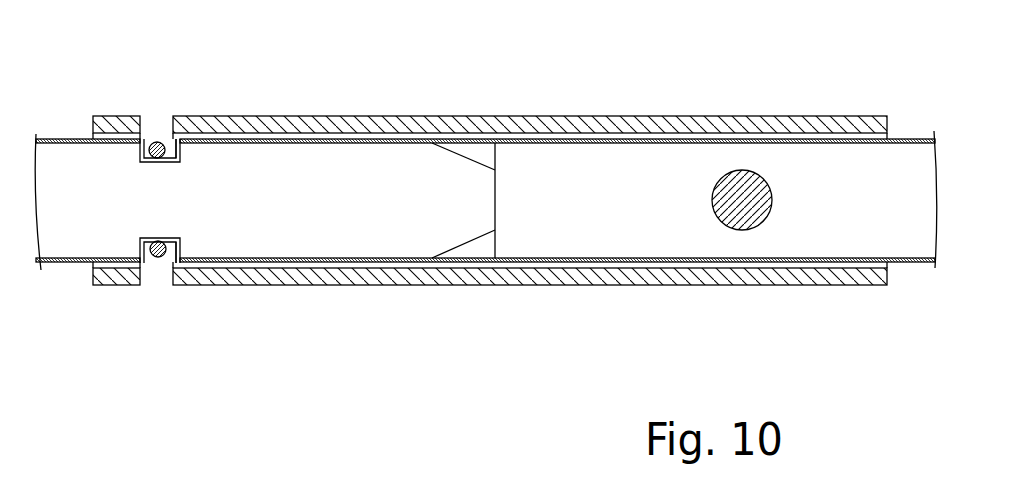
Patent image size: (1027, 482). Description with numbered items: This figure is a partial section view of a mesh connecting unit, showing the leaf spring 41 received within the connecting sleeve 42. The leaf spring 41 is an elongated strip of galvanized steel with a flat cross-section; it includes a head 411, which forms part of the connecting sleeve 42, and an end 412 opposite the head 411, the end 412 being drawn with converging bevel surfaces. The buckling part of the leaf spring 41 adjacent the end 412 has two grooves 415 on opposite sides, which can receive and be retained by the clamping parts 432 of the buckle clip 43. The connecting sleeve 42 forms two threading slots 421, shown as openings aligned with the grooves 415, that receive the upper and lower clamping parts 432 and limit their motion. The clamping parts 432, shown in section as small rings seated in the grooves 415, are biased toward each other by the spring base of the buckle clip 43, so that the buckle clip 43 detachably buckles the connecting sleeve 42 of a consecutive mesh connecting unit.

The leaf spring 41 is at (62, 139).
The head 411 is at (500, 198).
The end 412 is at (493, 200).
The groove 415 is at (148, 138).
The connecting sleeve 42 is at (365, 116).
The threading slot 421 is at (158, 128).
The buckle clip 43 is at (158, 258).
The clamping part 432 is at (173, 143).